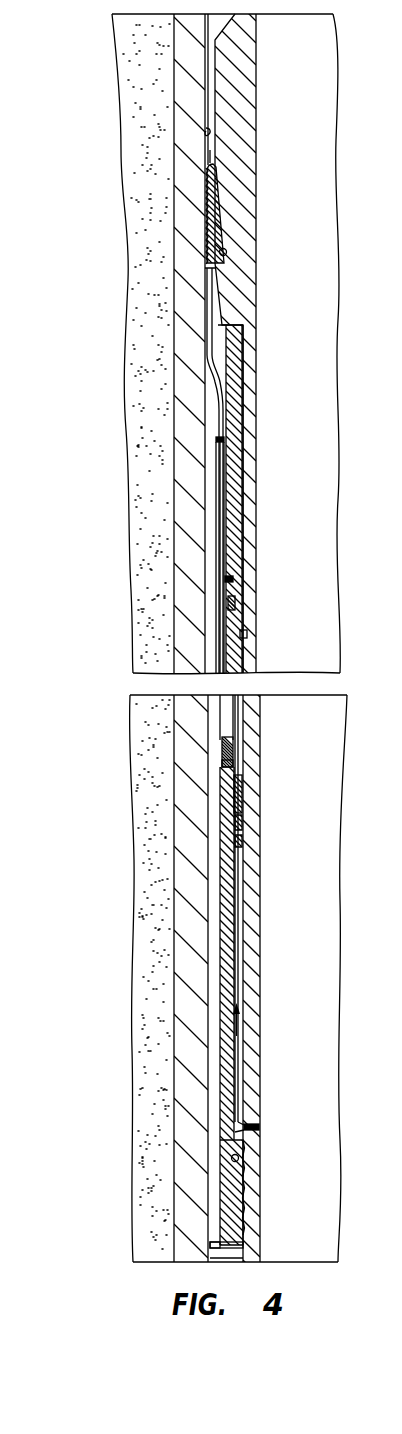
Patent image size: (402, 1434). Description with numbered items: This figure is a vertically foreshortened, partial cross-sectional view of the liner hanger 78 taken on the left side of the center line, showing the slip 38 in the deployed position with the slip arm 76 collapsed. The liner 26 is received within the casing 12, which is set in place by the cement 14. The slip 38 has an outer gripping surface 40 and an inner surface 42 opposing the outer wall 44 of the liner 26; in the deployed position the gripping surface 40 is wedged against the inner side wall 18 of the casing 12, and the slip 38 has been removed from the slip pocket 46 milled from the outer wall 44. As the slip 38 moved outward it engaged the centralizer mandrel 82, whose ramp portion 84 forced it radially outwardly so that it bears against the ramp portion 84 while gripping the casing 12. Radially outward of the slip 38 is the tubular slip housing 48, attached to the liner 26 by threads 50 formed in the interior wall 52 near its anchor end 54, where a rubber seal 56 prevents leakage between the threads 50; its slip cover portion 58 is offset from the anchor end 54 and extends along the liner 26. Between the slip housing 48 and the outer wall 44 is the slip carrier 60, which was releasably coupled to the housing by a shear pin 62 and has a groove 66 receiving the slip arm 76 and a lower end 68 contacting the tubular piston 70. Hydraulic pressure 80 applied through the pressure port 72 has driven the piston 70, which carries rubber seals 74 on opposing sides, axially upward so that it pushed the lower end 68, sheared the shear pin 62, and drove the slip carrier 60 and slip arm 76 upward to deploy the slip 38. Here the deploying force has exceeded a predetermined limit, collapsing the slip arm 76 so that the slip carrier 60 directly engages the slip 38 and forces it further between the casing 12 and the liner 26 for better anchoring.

The casing 12 is at (180, 42).
The cement 14 is at (184, 75).
The liner 26 is at (204, 108).
The centralizer mandrel 82 is at (206, 132).
The inner side wall 18 is at (210, 158).
The outer gripping surface 40 is at (206, 190).
The liner hanger 78 is at (149, 243).
The inner surface 42 is at (218, 170).
The slip 38 is at (239, 201).
The ramp portion 84 is at (226, 252).
The slip pocket 46 is at (246, 340).
The outer wall 44 is at (245, 459).
The slip arm 76 is at (208, 380).
The slip cover portion 58 is at (216, 472).
The groove 66 is at (222, 518).
The slip carrier 60 is at (230, 575).
The shear pin 62 is at (233, 604).
The lower end 68 is at (235, 740).
The piston 70 is at (243, 797).
The rubber seals 74 is at (241, 834).
The slip housing 48 is at (211, 910).
The hydraulic pressure 80 is at (240, 1032).
The pressure port 72 is at (256, 1126).
The rubber seal 56 is at (239, 1158).
The anchor end 54 is at (228, 1178).
The threads 50 is at (245, 1197).
The interior wall 52 is at (245, 1227).